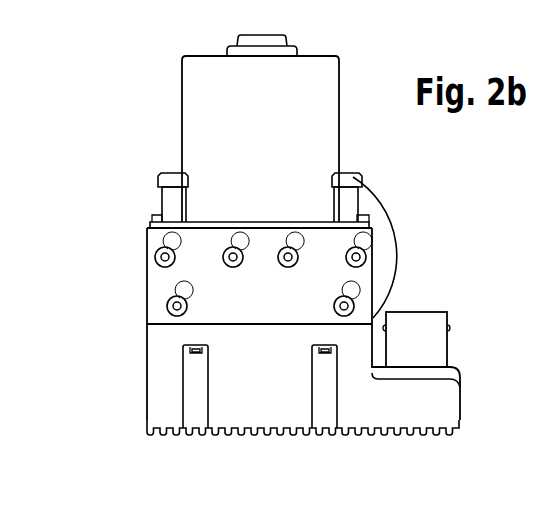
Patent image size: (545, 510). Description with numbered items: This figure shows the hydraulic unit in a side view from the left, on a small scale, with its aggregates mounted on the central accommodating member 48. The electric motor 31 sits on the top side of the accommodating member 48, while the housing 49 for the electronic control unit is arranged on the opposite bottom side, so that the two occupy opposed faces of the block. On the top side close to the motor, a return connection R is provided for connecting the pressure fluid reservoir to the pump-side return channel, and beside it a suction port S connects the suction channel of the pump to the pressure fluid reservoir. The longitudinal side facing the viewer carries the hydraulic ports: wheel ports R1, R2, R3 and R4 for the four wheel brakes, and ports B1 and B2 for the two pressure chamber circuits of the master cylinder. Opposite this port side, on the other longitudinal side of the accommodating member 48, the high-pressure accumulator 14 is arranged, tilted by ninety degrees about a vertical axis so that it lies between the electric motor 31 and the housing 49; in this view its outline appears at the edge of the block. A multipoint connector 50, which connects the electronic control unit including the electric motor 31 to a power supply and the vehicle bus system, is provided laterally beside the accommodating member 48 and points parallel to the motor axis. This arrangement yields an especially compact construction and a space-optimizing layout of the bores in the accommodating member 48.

The electric motor 31 is at (196, 88).
The return connection R is at (168, 178).
The suction port S is at (358, 176).
The high-pressure accumulator 14 is at (372, 204).
The accommodating member 48 is at (155, 313).
The housing 49 is at (155, 376).
The multipoint connector 50 is at (437, 352).
The port for master cylinder circuit B1 is at (160, 257).
The port for master cylinder circuit B2 is at (362, 257).
The wheel port R1 is at (172, 303).
The wheel port R2 is at (230, 248).
The wheel port R3 is at (294, 251).
The wheel port R4 is at (350, 303).